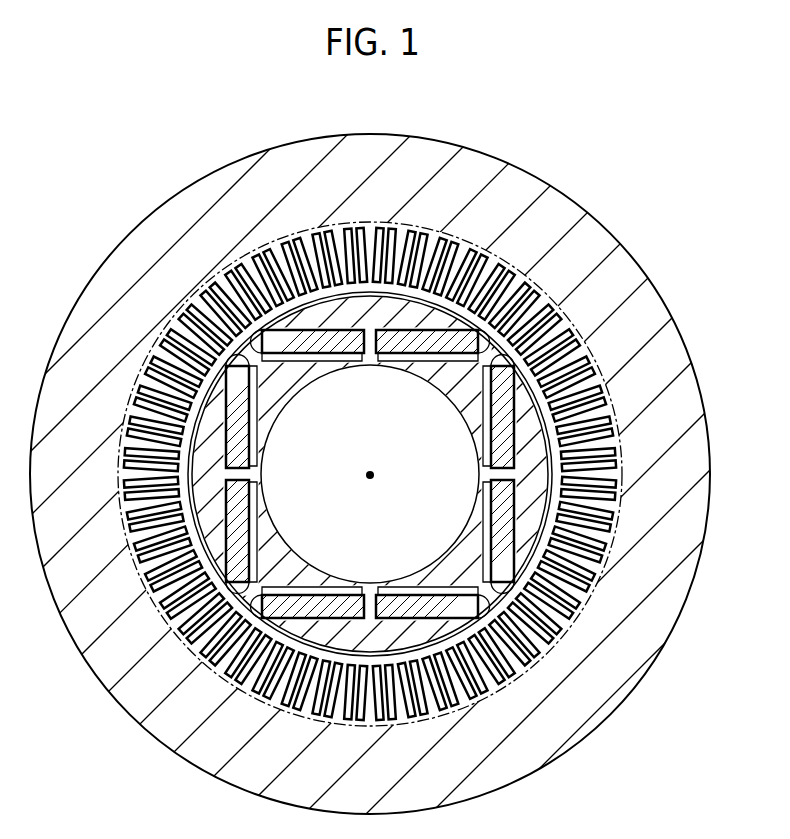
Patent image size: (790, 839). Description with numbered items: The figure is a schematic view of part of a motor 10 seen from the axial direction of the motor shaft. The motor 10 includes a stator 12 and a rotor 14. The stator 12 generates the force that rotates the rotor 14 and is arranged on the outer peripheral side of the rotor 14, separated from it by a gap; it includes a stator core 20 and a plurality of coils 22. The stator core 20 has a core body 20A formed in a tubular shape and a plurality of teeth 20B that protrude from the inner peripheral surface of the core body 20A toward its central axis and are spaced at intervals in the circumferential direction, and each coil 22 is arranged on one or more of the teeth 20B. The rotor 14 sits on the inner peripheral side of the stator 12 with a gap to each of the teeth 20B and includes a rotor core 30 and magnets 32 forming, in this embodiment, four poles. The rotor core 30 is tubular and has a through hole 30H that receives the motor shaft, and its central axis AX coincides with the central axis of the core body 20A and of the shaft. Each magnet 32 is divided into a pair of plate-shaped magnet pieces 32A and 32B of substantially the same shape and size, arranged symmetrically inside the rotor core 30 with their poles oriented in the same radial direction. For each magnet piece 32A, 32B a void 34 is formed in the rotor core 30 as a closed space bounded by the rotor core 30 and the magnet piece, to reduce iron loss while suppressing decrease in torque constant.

The motor 10 is at (70, 125).
The stator 12 is at (591, 177).
The rotor 14 is at (299, 458).
The stator core 20 is at (370, 393).
The core body 20A is at (487, 173).
The teeth 20B is at (497, 253).
The coils 22 is at (418, 232).
The rotor core 30 is at (277, 567).
The through hole 30H is at (355, 392).
The magnets 32 is at (370, 474).
The magnet piece 32A is at (348, 605).
The magnet piece 32B is at (427, 573).
The voids 34 is at (298, 593).
The central axis AX is at (370, 470).